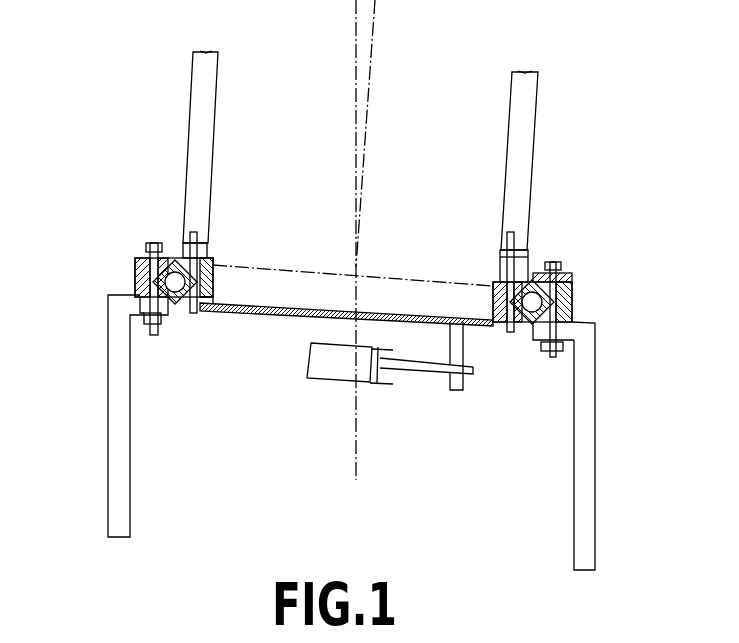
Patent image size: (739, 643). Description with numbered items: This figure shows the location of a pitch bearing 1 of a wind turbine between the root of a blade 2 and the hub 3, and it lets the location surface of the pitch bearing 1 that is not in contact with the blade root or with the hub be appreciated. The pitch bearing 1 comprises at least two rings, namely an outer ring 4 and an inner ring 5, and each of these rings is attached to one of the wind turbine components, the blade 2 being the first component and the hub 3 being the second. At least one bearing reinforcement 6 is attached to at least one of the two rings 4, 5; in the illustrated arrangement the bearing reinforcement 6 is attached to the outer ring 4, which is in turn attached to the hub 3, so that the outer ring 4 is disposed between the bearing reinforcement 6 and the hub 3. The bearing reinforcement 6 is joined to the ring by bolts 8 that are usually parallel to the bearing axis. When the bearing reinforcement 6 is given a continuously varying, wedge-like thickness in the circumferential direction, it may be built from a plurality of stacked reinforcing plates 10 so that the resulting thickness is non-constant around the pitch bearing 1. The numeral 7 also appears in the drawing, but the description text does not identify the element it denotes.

The pitch bearing 1 is at (580, 295).
The blade 2 is at (200, 100).
The hub 3 is at (583, 452).
The outer ring 4 is at (135, 276).
The inner ring 5 is at (213, 263).
The bearing reinforcement 6 is at (543, 254).
The bolt 7 is at (136, 252).
The bolts 8 is at (573, 312).
The reinforcing plates 10 is at (570, 282).